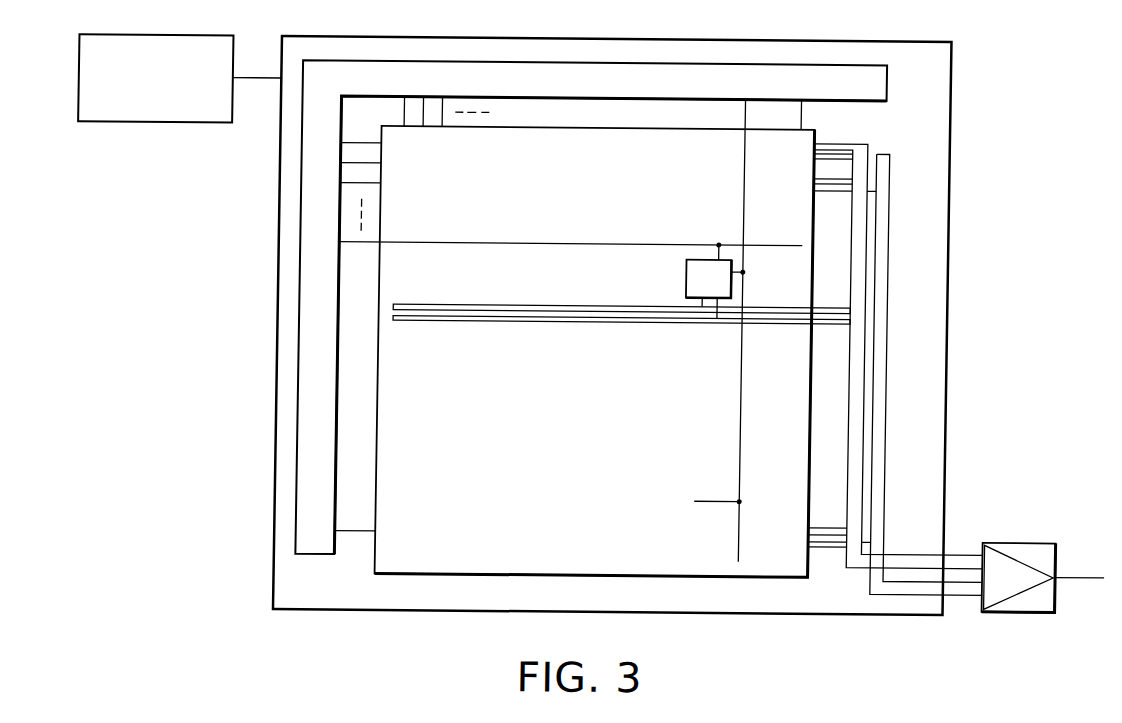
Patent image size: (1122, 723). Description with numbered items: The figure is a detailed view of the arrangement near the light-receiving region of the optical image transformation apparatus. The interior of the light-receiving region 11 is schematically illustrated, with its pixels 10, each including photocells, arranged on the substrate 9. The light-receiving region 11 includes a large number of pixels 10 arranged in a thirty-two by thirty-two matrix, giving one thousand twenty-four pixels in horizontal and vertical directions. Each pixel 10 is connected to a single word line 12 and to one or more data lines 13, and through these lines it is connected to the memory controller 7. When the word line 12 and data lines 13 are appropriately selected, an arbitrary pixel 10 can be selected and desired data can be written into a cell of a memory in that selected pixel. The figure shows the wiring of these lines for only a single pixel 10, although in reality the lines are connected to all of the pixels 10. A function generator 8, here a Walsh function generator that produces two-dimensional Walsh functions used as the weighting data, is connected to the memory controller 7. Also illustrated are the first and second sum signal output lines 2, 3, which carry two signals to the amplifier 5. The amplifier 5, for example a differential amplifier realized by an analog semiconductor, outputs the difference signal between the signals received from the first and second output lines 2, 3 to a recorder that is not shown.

The first sum signal output line 2 is at (858, 397).
The second sum signal output line 3 is at (887, 368).
The amplifier 5 is at (1021, 539).
The memory controller 7 is at (883, 79).
The function generator 8 is at (153, 126).
The substrate 9 is at (947, 133).
The pixel 10 is at (685, 277).
The light-receiving region 11 is at (637, 576).
The word line 12 is at (535, 243).
The data line 13 is at (742, 397).